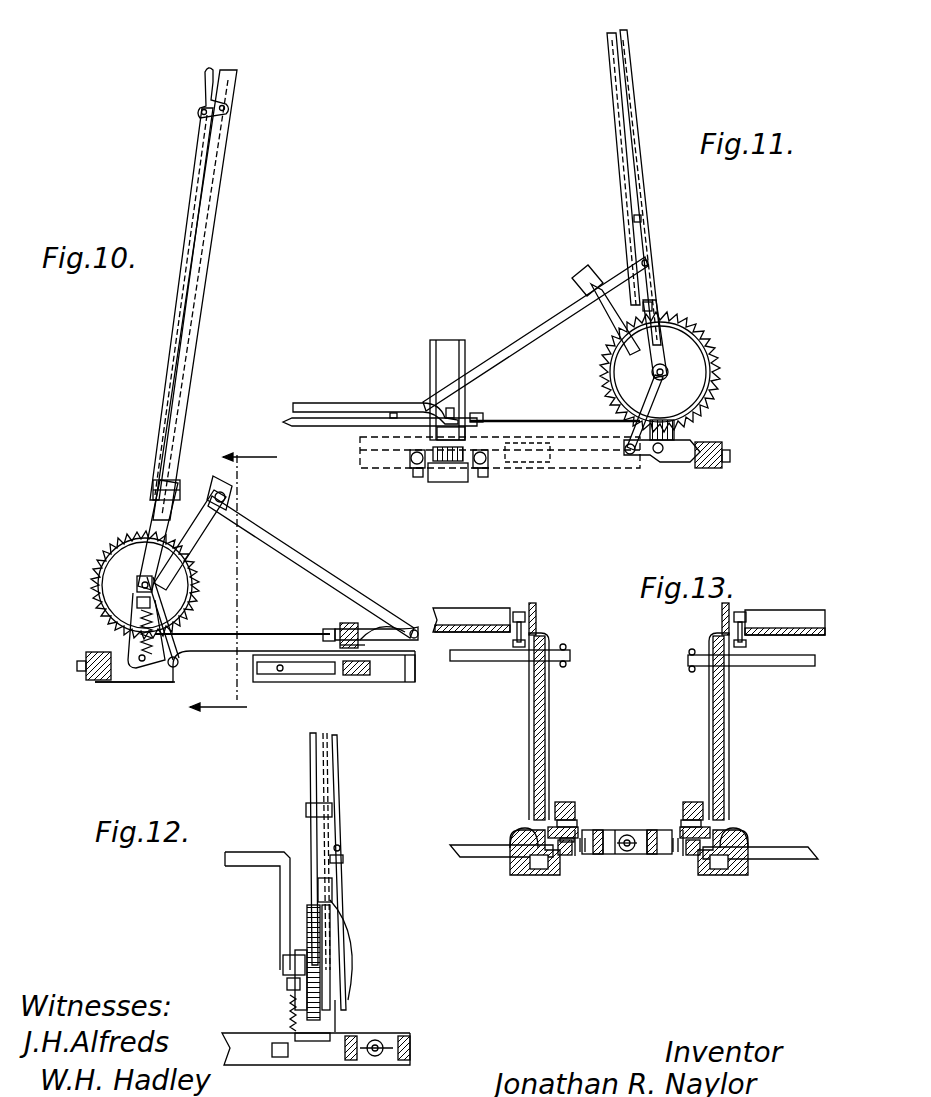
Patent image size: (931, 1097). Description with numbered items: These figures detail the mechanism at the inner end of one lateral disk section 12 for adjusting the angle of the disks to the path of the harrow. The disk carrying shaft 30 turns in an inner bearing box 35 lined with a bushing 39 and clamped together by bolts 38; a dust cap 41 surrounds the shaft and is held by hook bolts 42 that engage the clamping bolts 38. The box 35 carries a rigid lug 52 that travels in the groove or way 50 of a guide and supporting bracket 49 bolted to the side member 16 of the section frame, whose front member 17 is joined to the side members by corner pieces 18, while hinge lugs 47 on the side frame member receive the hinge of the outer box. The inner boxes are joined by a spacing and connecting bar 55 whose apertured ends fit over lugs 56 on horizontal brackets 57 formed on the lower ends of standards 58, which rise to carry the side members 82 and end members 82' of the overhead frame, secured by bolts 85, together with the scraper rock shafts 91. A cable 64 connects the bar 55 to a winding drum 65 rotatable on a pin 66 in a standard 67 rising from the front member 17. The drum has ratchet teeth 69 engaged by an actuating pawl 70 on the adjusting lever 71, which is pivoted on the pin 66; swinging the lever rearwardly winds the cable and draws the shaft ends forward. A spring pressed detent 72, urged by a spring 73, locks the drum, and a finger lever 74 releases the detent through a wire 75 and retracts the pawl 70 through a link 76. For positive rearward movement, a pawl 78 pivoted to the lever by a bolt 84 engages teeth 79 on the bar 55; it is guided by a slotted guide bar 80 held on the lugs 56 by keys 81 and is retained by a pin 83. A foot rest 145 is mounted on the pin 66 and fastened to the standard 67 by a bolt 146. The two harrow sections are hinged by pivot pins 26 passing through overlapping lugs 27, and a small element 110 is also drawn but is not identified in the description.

In FIG. 10, the lateral disk section 12 is at (233, 592).
In FIG. 10, the side member 16 is at (192, 676).
In FIG. 11, the side member 16 is at (640, 462).
In FIG. 12, the side member 16 is at (356, 1033).
In FIG. 13, the side member 16 is at (660, 832).
In FIG. 10, the front member 17 is at (92, 679).
In FIG. 11, the front member 17 is at (722, 446).
In FIG. 12, the front member 17 is at (243, 1052).
In FIG. 10, the corner piece 18 is at (82, 663).
In FIG. 11, the corner piece 18 is at (730, 460).
In FIG. 12, the horizontal pivot pin 26 is at (376, 1040).
In FIG. 13, the horizontal pivot pin 26 is at (628, 851).
In FIG. 12, the overlapping lug 27 is at (380, 1060).
In FIG. 13, the overlapping lug 27 is at (613, 858).
In FIG. 13, the disk carrying shaft 30 is at (463, 858).
In FIG. 11, the inner bearing box 35 is at (450, 482).
In FIG. 13, the inner bearing box 35 is at (535, 878).
In FIG. 11, the clamping bolt 38 is at (417, 477).
In FIG. 13, the bearing sleeve or bushing 39 is at (520, 872).
In FIG. 11, the dust guard or cap 41 is at (410, 457).
In FIG. 13, the dust guard or cap 41 is at (508, 840).
In FIG. 11, the hook bolt 42 is at (488, 465).
In FIG. 11, the hinge lug 47 is at (413, 469).
In FIG. 10, the guide and supporting bracket 49 is at (297, 677).
In FIG. 11, the guide and supporting bracket 49 is at (360, 462).
In FIG. 13, the guide and supporting bracket 49 is at (576, 858).
In FIG. 10, the groove or way 50 is at (402, 670).
In FIG. 11, the groove or way 50 is at (368, 446).
In FIG. 13, the groove or way 50 is at (581, 860).
In FIG. 10, the lug 52 is at (360, 676).
In FIG. 11, the lug 52 is at (445, 461).
In FIG. 13, the lug 52 is at (564, 856).
In FIG. 10, the spacing and connecting bar 55 is at (328, 633).
In FIG. 11, the spacing and connecting bar 55 is at (292, 427).
In FIG. 13, the spacing and connecting bar 55 is at (583, 822).
In FIG. 10, the upwardly extending lug 56 is at (356, 629).
In FIG. 11, the upwardly extending lug 56 is at (454, 410).
In FIG. 13, the upwardly extending lug 56 is at (563, 803).
In FIG. 10, the horizontal bracket 57 is at (348, 645).
In FIG. 11, the horizontal bracket 57 is at (467, 430).
In FIG. 13, the horizontal bracket 57 is at (578, 830).
In FIG. 11, the standard 58 is at (460, 340).
In FIG. 13, the standard 58 is at (534, 725).
In FIG. 10, the cable 64 is at (217, 607).
In FIG. 11, the cable 64 is at (545, 420).
In FIG. 12, the cable 64 is at (336, 1016).
In FIG. 10, the winding drum 65 is at (145, 585).
In FIG. 11, the winding drum 65 is at (716, 404).
In FIG. 12, the winding drum 65 is at (331, 929).
In FIG. 10, the pin or bolt 66 is at (136, 584).
In FIG. 11, the pin or bolt 66 is at (672, 371).
In FIG. 12, the pin or bolt 66 is at (284, 965).
In FIG. 10, the drum supporting standard 67 is at (133, 612).
In FIG. 11, the drum supporting standard 67 is at (680, 444).
In FIG. 12, the drum supporting standard 67 is at (298, 954).
In FIG. 10, the ratchet teeth 69 is at (98, 560).
In FIG. 11, the ratchet teeth 69 is at (693, 323).
In FIG. 12, the ratchet teeth 69 is at (340, 917).
In FIG. 10, the actuating pawl 70 is at (170, 567).
In FIG. 11, the actuating pawl 70 is at (655, 306).
In FIG. 12, the actuating pawl 70 is at (333, 887).
In FIG. 10, the adjusting lever 71 is at (172, 382).
In FIG. 11, the adjusting lever 71 is at (608, 51).
In FIG. 12, the adjusting lever 71 is at (312, 743).
In FIG. 10, the spring pressed detent 72 is at (168, 667).
In FIG. 11, the spring pressed detent 72 is at (652, 462).
In FIG. 12, the spring pressed detent 72 is at (302, 1041).
In FIG. 10, the spring 73 is at (145, 655).
In FIG. 12, the spring 73 is at (289, 1010).
In FIG. 10, the finger lever 74 is at (207, 79).
In FIG. 10, the flexible strand or wire 75 is at (182, 289).
In FIG. 11, the flexible strand or wire 75 is at (650, 229).
In FIG. 12, the flexible strand or wire 75 is at (338, 772).
In FIG. 10, the link 76 is at (183, 426).
In FIG. 11, the link 76 is at (622, 197).
In FIG. 12, the link 76 is at (327, 722).
In FIG. 10, the actuating pawl 78 is at (285, 556).
In FIG. 11, the actuating pawl 78 is at (517, 342).
In FIG. 12, the actuating pawl 78 is at (343, 859).
In FIG. 10, the teeth or projections 79 is at (386, 627).
In FIG. 11, the teeth or projections 79 is at (315, 418).
In FIG. 10, the slotted guide bar 80 is at (420, 629).
In FIG. 11, the slotted guide bar 80 is at (350, 403).
In FIG. 13, the slotted guide bar 80 is at (574, 812).
In FIG. 10, the pin or key 81 is at (346, 629).
In FIG. 11, the pin or key 81 is at (478, 416).
In FIG. 13, the pin or key 81 is at (566, 800).
In FIG. 13, the side member of supporting frame 82 is at (629, 607).
In FIG. 13, the end member of supporting frame 82' is at (629, 600).
In FIG. 10, the pin 83 is at (414, 628).
In FIG. 11, the pin 83 is at (394, 412).
In FIG. 10, the pivot bolt 84 is at (160, 483).
In FIG. 11, the pivot bolt 84 is at (648, 261).
In FIG. 12, the pivot bolt 84 is at (341, 849).
In FIG. 13, the bolt 85 is at (518, 611).
In FIG. 13, the rock shaft 91 is at (494, 661).
In FIG. 13, the pin 110 is at (565, 649).
In FIG. 10, the foot rest 145 is at (177, 553).
In FIG. 11, the foot rest 145 is at (603, 310).
In FIG. 12, the foot rest 145 is at (280, 899).
In FIG. 10, the bolt 146 is at (150, 600).
In FIG. 12, the bolt 146 is at (286, 983).